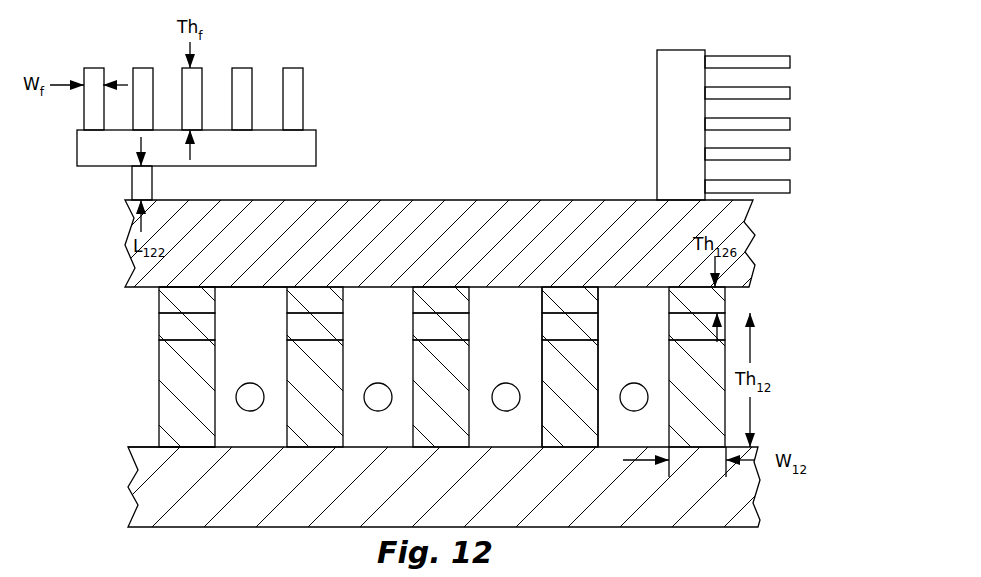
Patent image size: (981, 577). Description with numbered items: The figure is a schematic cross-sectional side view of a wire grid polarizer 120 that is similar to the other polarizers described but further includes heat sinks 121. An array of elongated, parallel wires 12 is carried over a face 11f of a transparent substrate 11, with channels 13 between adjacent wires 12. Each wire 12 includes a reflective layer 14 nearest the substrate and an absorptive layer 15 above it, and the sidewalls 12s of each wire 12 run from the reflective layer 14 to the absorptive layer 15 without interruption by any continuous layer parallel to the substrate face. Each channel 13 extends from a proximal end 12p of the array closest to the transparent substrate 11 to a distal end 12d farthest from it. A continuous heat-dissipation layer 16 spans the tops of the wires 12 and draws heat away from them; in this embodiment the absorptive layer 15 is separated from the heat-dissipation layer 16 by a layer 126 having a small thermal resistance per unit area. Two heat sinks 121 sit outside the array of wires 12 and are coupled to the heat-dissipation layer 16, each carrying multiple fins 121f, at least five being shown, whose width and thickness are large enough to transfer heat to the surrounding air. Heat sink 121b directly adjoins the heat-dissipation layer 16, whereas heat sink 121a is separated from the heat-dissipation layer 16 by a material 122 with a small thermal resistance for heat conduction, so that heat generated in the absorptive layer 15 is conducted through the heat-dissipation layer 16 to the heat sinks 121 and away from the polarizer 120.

The transparent substrate 11 is at (449, 497).
The face of the transparent substrate 11f is at (147, 445).
The wires 12 is at (446, 367).
The distal end of the array of wires 12d is at (200, 280).
The proximal end of the array of wires 12p is at (185, 452).
The sidewalls of the wires 12s is at (540, 329).
The channels 13 is at (442, 397).
The reflective layer 14 is at (705, 410).
The absorptive layer 15 is at (706, 336).
The heat-dissipation layer 16 is at (452, 247).
The wire grid polarizer 120 is at (75, 463).
The heat sink 121 is at (444, 169).
The heat sink 121a is at (316, 147).
The heat sink 121b is at (677, 175).
The fins 121f is at (335, 70).
The material 122 is at (142, 183).
The layer 126 is at (711, 310).